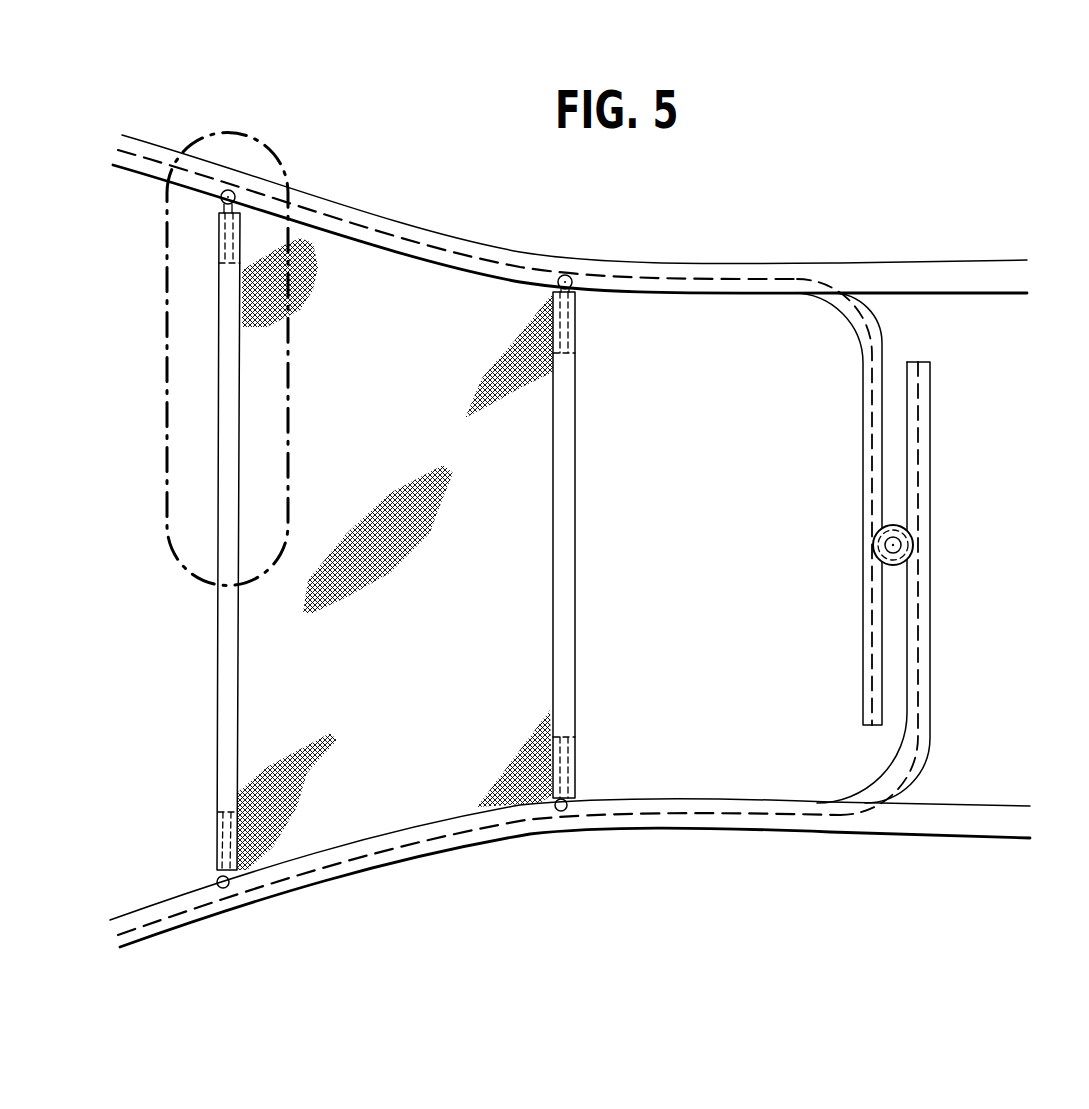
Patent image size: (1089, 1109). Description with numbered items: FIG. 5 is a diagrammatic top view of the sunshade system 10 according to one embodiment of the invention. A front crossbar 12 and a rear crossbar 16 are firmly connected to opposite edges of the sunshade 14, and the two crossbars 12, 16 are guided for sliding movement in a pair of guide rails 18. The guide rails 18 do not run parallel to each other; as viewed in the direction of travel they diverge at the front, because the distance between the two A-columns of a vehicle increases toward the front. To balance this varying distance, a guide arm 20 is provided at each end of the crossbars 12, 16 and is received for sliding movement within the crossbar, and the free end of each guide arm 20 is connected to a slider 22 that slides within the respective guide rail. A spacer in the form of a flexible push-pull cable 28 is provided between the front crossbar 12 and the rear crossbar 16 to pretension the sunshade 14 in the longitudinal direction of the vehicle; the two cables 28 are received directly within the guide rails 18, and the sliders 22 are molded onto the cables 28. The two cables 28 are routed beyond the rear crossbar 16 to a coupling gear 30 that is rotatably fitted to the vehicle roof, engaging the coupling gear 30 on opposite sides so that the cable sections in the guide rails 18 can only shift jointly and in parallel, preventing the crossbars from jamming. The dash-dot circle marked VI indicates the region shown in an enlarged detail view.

The sunshade system 10 is at (750, 212).
The front crossbar 12 is at (220, 612).
The sunshade 14 is at (255, 667).
The rear crossbar 16 is at (570, 572).
The guide rails 18 is at (947, 274).
The guide arm 20 is at (580, 331).
The slider 22 is at (576, 790).
The push-pull cable 28 is at (388, 248).
The coupling gear 30 is at (915, 548).
The detail view indicator VI is at (290, 170).